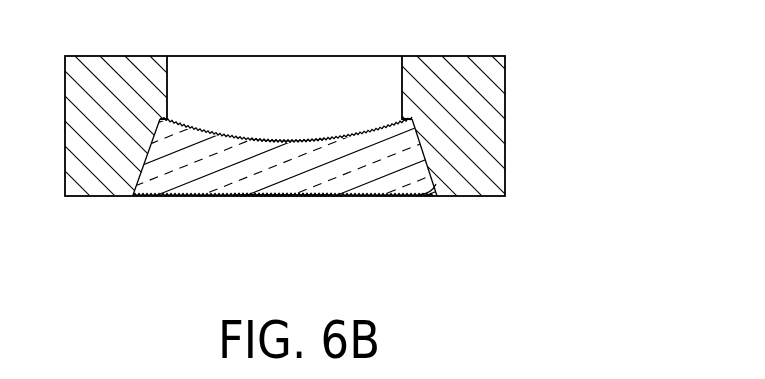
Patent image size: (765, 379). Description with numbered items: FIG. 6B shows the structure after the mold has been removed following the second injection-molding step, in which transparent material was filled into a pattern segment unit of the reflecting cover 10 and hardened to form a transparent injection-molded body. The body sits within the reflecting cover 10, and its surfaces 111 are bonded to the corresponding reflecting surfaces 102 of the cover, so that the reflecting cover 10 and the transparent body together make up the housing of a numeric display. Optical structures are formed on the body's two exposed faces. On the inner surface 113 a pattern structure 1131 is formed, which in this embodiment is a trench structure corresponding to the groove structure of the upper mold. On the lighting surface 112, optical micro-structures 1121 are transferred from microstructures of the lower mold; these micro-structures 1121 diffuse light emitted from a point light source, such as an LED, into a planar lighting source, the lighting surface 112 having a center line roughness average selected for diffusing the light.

The reflecting cover 10 is at (467, 114).
The reflecting surface 102 is at (427, 160).
The surface of the transparent injection-molded body 111 is at (419, 197).
The lighting surface 112 is at (373, 206).
The optical micro-structures 1121 is at (290, 197).
The inner surface 113 is at (189, 112).
The pattern structure 1131 is at (254, 139).